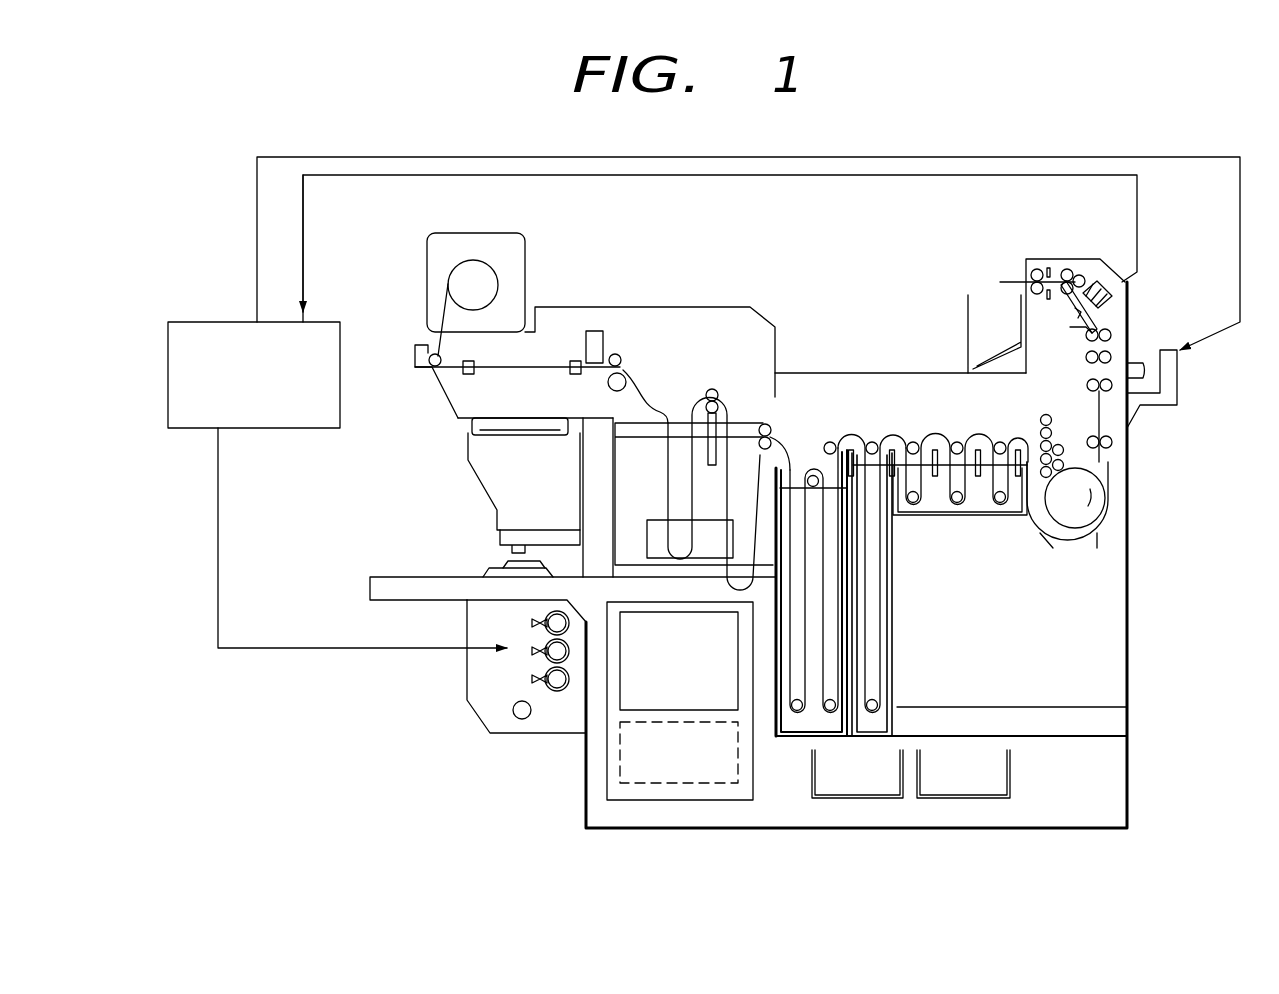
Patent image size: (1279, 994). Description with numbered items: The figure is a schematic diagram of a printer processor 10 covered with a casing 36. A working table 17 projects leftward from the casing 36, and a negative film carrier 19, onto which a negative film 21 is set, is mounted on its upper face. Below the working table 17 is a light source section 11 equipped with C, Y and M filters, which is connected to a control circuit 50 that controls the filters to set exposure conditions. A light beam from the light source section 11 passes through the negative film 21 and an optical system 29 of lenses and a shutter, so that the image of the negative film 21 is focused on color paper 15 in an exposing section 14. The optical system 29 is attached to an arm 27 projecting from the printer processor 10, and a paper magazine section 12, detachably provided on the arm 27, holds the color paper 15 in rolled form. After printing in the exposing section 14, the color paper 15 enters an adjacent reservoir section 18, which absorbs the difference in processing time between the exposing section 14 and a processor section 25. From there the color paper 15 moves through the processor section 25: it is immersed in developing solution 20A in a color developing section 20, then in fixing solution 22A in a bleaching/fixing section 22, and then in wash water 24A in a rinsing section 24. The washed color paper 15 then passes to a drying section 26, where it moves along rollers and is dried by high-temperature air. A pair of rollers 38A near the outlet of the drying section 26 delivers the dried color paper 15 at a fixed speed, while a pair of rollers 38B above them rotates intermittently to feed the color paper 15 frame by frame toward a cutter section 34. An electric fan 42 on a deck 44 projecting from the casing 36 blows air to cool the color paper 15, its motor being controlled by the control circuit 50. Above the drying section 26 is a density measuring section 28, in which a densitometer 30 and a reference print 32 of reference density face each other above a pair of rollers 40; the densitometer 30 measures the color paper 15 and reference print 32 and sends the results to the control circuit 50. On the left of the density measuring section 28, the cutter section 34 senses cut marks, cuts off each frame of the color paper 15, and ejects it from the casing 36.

The printer processor 10 is at (357, 668).
The light source section 11 is at (495, 670).
The paper magazine section 12 is at (517, 247).
The exposing section 14 is at (535, 362).
The color paper 15 is at (428, 358).
The working table 17 is at (377, 585).
The reservoir section 18 is at (684, 410).
The negative film carrier 19 is at (505, 571).
The color developing section 20 is at (797, 738).
The developing solution 20A is at (808, 497).
The negative film 21 is at (538, 565).
The bleaching/fixing section 22 is at (882, 718).
The fixing solution 22A is at (858, 480).
The rinsing section 24 is at (957, 520).
The wash water 24A is at (975, 462).
The processor section 25 is at (910, 392).
The drying section 26 is at (1073, 545).
The arm 27 is at (455, 385).
The density measuring section 28 is at (1115, 316).
The optical system 29 is at (487, 453).
The densitometer 30 is at (1090, 282).
The reference print 32 is at (1070, 307).
The cutter section 34 is at (1045, 268).
The casing 36 is at (778, 340).
The pair of rollers 38A is at (1100, 390).
The pair of rollers 38B is at (1100, 363).
The pair of rollers 40 is at (1097, 332).
The electric fan 42 is at (1180, 378).
The deck 44 is at (1135, 425).
The control circuit 50 is at (184, 430).